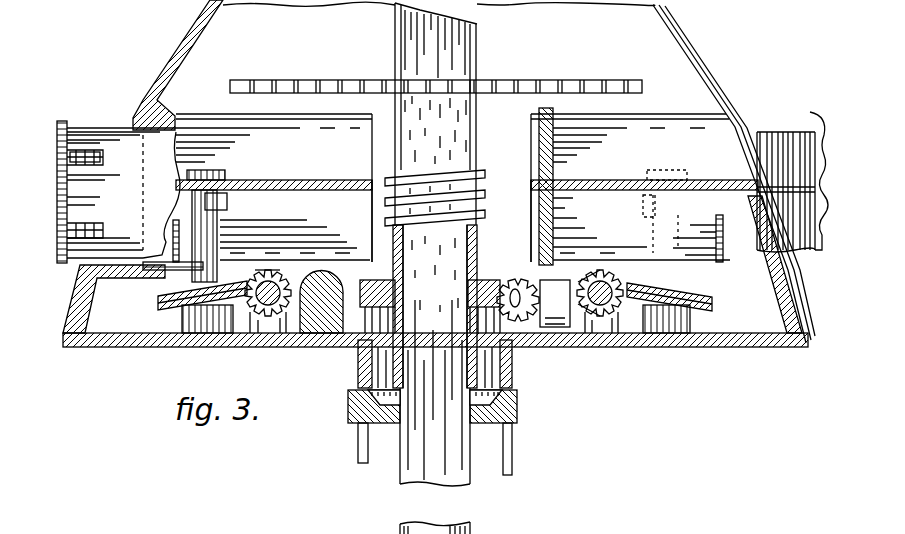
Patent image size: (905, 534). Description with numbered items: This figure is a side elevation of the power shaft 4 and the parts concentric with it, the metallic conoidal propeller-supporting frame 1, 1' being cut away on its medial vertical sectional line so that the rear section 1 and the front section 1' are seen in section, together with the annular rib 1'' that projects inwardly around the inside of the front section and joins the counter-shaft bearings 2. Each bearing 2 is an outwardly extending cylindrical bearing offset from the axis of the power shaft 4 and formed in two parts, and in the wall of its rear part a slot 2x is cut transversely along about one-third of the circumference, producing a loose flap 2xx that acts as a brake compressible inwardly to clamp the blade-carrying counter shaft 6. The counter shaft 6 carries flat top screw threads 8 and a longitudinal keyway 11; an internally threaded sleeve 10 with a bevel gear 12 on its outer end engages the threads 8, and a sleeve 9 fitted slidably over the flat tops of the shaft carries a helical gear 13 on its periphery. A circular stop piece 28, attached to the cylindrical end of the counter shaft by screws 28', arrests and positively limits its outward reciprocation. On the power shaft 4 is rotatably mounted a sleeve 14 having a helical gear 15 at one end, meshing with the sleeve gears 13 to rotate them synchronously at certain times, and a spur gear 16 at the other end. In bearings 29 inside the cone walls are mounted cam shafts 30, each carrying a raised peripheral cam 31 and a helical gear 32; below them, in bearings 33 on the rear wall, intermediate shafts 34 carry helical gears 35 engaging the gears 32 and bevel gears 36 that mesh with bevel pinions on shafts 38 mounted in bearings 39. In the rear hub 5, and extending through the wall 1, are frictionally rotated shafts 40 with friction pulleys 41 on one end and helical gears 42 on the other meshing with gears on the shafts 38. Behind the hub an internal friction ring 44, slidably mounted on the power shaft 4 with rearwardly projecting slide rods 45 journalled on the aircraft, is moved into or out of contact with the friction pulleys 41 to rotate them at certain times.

The frame 1 is at (435, 183).
The front section of frame 1' is at (483, 172).
The annular rib 1'' is at (388, 188).
The counter-shaft bearing 2 is at (453, 187).
The slot 2x is at (740, 272).
The flap 2xx is at (479, 224).
The power shaft 4 is at (470, 484).
The rear hub 5 is at (357, 360).
The counter shaft 6 is at (770, 110).
The screw threads 8 is at (798, 250).
The sleeve 9 is at (380, 231).
The internally threaded sleeve 10 is at (515, 204).
The keyway 11 is at (814, 173).
The bevel gear 12 is at (539, 182).
The helical gear 13 is at (435, 355).
The sleeve 14 is at (478, 98).
The helical gear 15 is at (486, 200).
The spur gear 16 is at (512, 79).
The circular stop piece 28 is at (89, 194).
The screws 28' is at (103, 189).
The bearing 29 is at (225, 173).
The cam shaft 30 is at (200, 222).
The cam 31 is at (228, 198).
The helical gear 32 is at (157, 300).
The bearing 33 is at (250, 333).
The intermediate shaft 34 is at (268, 316).
The helical gear 35 is at (253, 272).
The bevel gear 36 is at (590, 275).
The shaft 38 is at (318, 347).
The bearing 39 is at (420, 322).
The frictionally rotated shaft 40 is at (380, 373).
The friction pulley 41 is at (388, 405).
The helical gear 42 is at (375, 279).
The internal friction ring 44 is at (518, 410).
The slide rod 45 is at (357, 444).